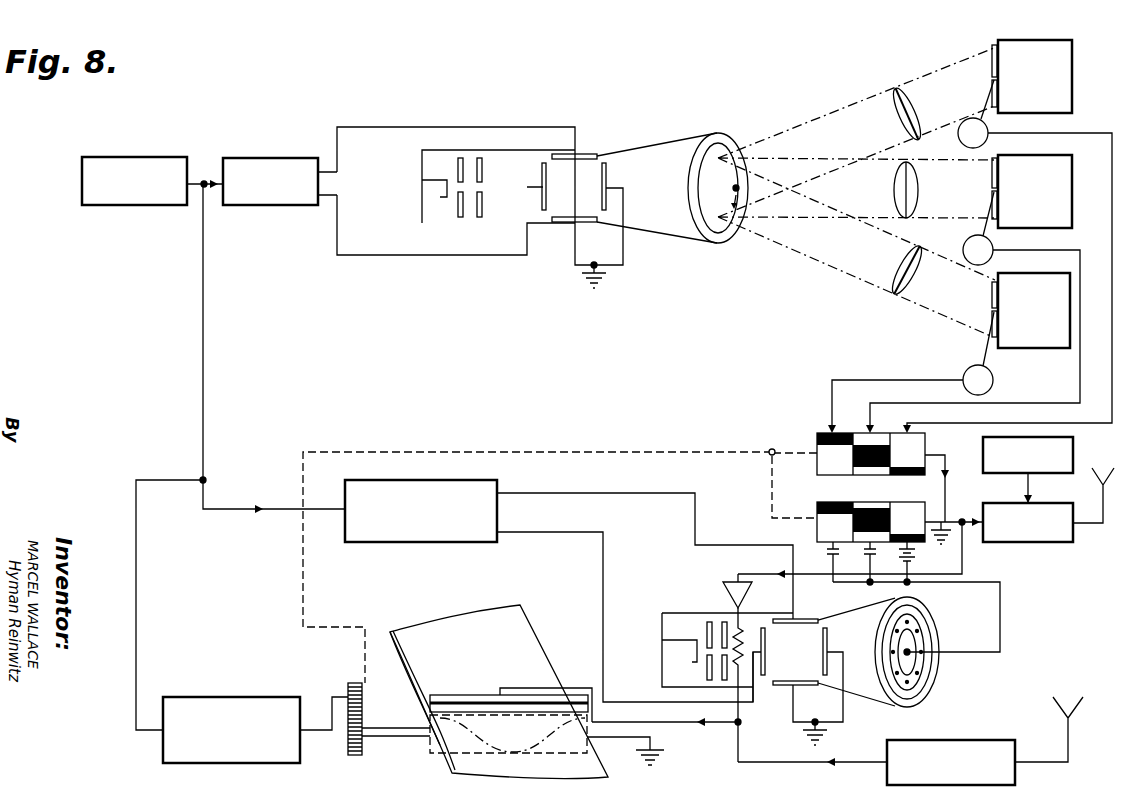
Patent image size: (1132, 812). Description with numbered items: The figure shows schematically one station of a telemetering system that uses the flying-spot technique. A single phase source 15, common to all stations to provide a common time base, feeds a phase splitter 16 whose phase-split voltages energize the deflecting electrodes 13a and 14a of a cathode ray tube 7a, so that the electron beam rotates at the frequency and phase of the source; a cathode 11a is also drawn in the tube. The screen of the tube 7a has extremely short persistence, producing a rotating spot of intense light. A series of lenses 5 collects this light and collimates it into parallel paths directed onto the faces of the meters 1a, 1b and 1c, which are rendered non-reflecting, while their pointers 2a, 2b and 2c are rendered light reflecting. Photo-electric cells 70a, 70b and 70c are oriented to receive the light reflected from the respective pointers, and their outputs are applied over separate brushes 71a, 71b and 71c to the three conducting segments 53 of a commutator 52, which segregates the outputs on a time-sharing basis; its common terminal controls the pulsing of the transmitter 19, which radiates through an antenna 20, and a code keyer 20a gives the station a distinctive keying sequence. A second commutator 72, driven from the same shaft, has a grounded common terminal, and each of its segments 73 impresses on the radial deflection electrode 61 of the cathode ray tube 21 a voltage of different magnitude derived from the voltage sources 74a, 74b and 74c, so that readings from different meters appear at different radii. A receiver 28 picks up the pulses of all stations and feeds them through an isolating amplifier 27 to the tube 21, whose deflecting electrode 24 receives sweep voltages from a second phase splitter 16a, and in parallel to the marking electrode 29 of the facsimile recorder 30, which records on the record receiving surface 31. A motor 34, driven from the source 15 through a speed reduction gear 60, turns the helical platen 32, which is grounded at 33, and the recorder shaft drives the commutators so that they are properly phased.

The single phase source 15 is at (175, 160).
The phase splitter 16 is at (270, 148).
The cathode of transmitting cathode ray tube 11a is at (445, 180).
The deflecting electrode 14a is at (618, 150).
The deflecting electrode 13a is at (560, 222).
The cathode ray tube 7a is at (678, 142).
The lenses 5 is at (893, 96).
The pointer 2a is at (997, 286).
The pointer 2b is at (997, 166).
The pointer 2c is at (993, 50).
The meter 1a is at (1053, 330).
The meter 1b is at (1060, 193).
The meter 1c is at (1060, 70).
The photo-electric cell 70a is at (993, 386).
The photo-electric cell 70b is at (993, 247).
The photo-electric cell 70c is at (988, 131).
The brush 71a is at (834, 432).
The brush 71b is at (872, 432).
The brush 71c is at (909, 432).
The commutator 52 is at (817, 449).
The conducting segments 53 is at (872, 468).
The commutator 72 is at (817, 516).
The conducting segments 73 is at (905, 516).
The voltage source 74a is at (827, 551).
The voltage source 74b is at (866, 556).
The voltage source 74c is at (913, 560).
The code keyer 20a is at (1065, 457).
The transmitter 19 is at (1062, 536).
The transmitting antenna 20 is at (1104, 485).
The phase splitter 16a is at (482, 478).
The motor 34 is at (282, 683).
The speed reduction gear 60 is at (347, 745).
The facsimile recorder 30 is at (570, 618).
The record receiving surface 31 is at (432, 634).
The marking electrode 29 is at (552, 700).
The helical platen 32 is at (440, 746).
The ground connection 33 is at (587, 753).
The isolating amplifier 27 is at (723, 592).
The cathode ray tube 21 is at (869, 693).
The deflecting electrode 24 is at (815, 608).
The radial deflection electrode 61 is at (911, 651).
The receiver 28 is at (1012, 730).